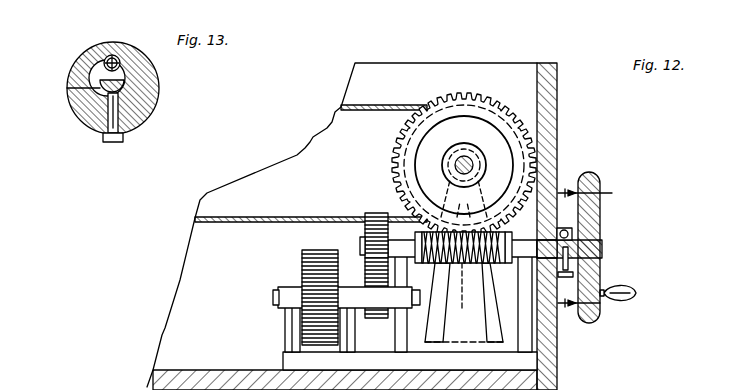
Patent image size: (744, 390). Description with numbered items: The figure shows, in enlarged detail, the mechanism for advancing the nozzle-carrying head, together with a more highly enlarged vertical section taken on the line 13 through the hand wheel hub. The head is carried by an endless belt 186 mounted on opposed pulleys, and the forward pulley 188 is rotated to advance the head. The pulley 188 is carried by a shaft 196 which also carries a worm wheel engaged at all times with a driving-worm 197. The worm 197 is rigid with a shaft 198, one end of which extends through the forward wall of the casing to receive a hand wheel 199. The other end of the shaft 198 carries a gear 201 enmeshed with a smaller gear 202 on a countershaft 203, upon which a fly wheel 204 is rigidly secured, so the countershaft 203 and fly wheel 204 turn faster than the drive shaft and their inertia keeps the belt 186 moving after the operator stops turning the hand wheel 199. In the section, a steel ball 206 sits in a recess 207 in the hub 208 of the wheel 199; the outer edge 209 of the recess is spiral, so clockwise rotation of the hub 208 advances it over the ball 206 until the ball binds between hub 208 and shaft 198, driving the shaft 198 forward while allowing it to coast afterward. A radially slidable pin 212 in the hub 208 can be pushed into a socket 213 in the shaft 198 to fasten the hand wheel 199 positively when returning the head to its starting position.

In FIG. 12, the section line 13— 13 is at (593, 252).
In FIG. 12, the belt 186 is at (265, 217).
In FIG. 12, the pulley 188 is at (493, 103).
In FIG. 12, the shaft 196 is at (468, 160).
In FIG. 12, the driving-worm 197 is at (463, 266).
In FIG. 13, the shaft 198 is at (100, 88).
In FIG. 12, the shaft 198 is at (602, 247).
In FIG. 13, the hand wheel 199 is at (152, 90).
In FIG. 12, the hand wheel 199 is at (592, 218).
In FIG. 12, the gear 201 is at (370, 213).
In FIG. 12, the gear 202 is at (377, 322).
In FIG. 12, the countershaft 203 is at (277, 297).
In FIG. 12, the fly wheel 204 is at (315, 278).
In FIG. 13, the steel ball 206 is at (102, 55).
In FIG. 12, the steel ball 206 is at (583, 230).
In FIG. 13, the recess 207 is at (72, 62).
In FIG. 13, the hub 208 is at (80, 117).
In FIG. 13, the outer edge 209 is at (127, 55).
In FIG. 13, the pin 212 is at (112, 123).
In FIG. 13, the socket 213 is at (127, 78).